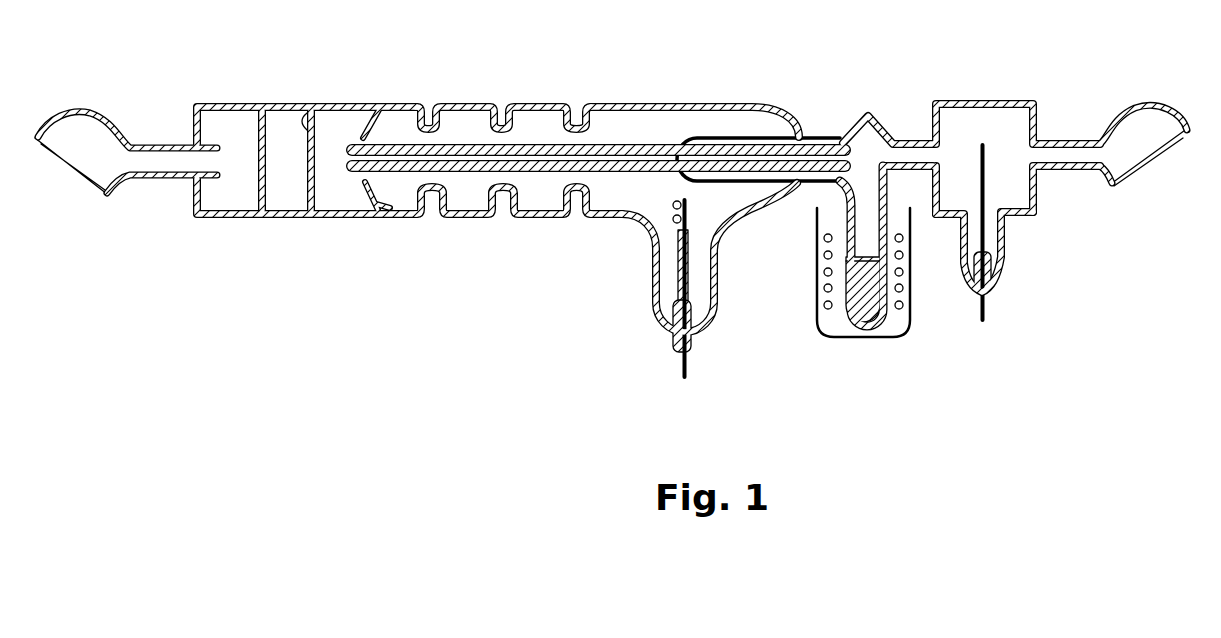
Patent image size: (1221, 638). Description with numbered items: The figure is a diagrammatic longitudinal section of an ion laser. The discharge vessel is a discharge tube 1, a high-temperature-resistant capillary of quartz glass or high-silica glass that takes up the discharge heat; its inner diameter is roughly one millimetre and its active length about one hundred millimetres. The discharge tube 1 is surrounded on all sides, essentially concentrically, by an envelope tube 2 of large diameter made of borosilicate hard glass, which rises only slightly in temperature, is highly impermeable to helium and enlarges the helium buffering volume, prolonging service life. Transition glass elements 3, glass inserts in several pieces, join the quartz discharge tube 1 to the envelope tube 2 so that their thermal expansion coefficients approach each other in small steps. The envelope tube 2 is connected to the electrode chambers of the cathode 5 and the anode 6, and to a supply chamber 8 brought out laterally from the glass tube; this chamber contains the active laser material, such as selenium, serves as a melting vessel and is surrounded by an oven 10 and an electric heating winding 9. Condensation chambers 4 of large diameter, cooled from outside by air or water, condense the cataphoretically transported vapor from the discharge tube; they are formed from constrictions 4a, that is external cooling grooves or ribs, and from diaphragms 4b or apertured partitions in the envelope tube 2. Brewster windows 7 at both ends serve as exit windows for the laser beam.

The discharge tube 1 is at (645, 143).
The envelope tube 2 is at (758, 103).
The transition glass elements 3 is at (752, 136).
The condensation chambers 4 is at (530, 116).
The constrictions 4a is at (428, 200).
The diaphragms 4b is at (302, 122).
The cathode 5 is at (672, 277).
The anode 6 is at (1002, 218).
The Brewster windows 7 is at (1165, 152).
The supply chamber 8 is at (887, 314).
The electric heating winding 9 is at (826, 293).
The oven 10 is at (834, 338).